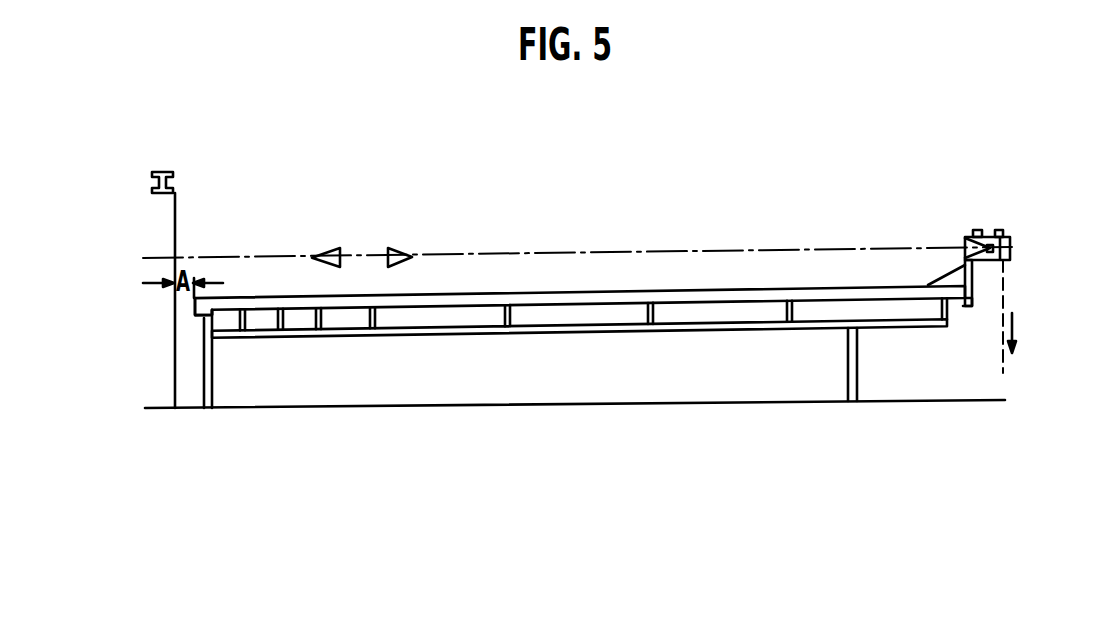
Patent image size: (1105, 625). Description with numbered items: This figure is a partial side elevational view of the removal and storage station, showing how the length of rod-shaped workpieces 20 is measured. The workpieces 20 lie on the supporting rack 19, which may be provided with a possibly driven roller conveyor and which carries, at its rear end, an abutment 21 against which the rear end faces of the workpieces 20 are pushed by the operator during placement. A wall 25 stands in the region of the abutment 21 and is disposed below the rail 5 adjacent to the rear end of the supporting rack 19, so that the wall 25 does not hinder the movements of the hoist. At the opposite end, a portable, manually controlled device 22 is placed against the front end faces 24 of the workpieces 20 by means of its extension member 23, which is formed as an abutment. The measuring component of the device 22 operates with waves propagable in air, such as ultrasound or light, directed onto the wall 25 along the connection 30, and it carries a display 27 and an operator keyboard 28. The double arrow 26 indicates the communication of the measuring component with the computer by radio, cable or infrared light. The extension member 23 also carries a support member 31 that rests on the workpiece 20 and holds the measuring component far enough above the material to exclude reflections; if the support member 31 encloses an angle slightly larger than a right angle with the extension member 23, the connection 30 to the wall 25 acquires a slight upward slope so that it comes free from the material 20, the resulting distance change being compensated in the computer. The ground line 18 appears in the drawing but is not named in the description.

The rail 5 is at (173, 180).
The base 18 is at (573, 413).
The supporting rack 19 is at (712, 314).
The rod-shaped workpieces 20 is at (577, 296).
The abutment 21 is at (195, 307).
The manually controlled device 22 is at (1003, 245).
The extension member 23 is at (975, 282).
The front end faces 24 is at (970, 308).
The wall 25 is at (173, 222).
The double arrow 26 is at (1015, 345).
The display 27 is at (978, 230).
The operator keyboard 28 is at (999, 230).
The connection 30 is at (672, 252).
The support member 31 is at (950, 278).